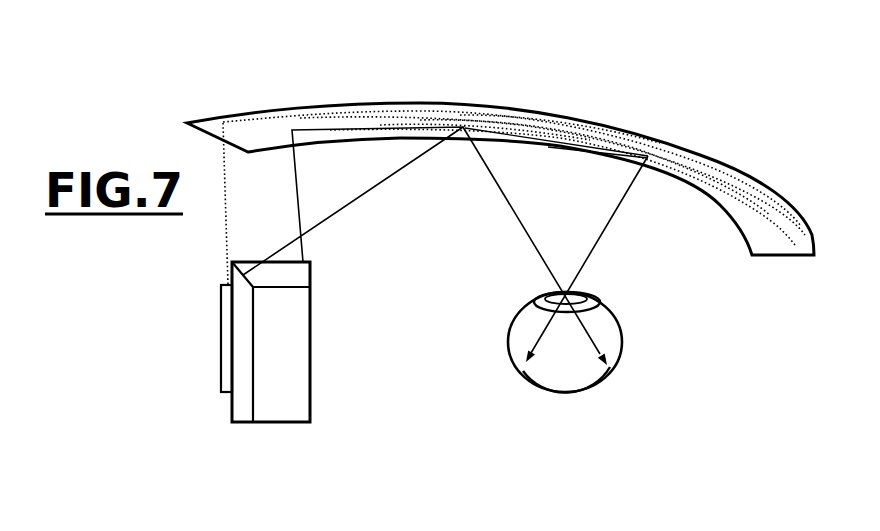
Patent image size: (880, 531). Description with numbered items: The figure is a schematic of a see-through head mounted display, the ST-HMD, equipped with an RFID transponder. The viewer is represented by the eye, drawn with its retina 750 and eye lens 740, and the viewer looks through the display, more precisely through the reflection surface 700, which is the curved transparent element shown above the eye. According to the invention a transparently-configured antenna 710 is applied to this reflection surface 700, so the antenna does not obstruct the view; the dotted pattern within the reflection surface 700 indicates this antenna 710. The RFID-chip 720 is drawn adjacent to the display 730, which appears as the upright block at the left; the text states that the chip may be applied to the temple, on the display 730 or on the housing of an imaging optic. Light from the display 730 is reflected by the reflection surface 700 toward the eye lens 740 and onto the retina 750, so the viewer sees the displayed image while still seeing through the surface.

The reflection surface 700 is at (768, 243).
The transparently-configured antenna 710 is at (336, 98).
The RFID-chip 720 is at (190, 336).
The display 730 is at (276, 415).
The eye lens 740 is at (534, 290).
The retina 750 is at (510, 389).